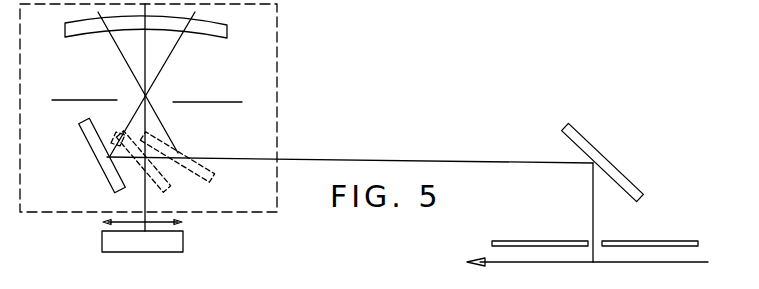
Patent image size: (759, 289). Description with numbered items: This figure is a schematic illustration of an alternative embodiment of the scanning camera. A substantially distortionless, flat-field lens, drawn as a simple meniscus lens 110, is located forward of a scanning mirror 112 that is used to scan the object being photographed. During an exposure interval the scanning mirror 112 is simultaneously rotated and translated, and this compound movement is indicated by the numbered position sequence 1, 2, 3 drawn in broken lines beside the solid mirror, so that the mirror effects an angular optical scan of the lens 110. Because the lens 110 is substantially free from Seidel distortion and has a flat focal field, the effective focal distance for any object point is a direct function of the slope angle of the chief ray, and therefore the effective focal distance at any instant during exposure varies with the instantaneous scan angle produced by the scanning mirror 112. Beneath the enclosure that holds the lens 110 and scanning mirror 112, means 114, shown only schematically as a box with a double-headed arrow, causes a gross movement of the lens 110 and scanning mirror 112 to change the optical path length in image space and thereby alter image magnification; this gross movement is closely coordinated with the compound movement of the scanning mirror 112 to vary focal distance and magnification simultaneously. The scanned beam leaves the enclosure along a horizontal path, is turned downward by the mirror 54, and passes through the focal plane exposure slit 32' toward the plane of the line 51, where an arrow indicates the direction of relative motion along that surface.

The concave mirror 110 is at (216, 30).
The rotatable plane mirror 112 is at (108, 155).
The first alternate mirror position 1 is at (125, 167).
The second alternate mirror position 2 is at (148, 168).
The third alternate mirror position 3 is at (184, 163).
The mirror drive 114 is at (145, 243).
The deflecting mirror 54 is at (597, 153).
The slit 32' is at (595, 232).
The recording medium / film 51 is at (648, 263).